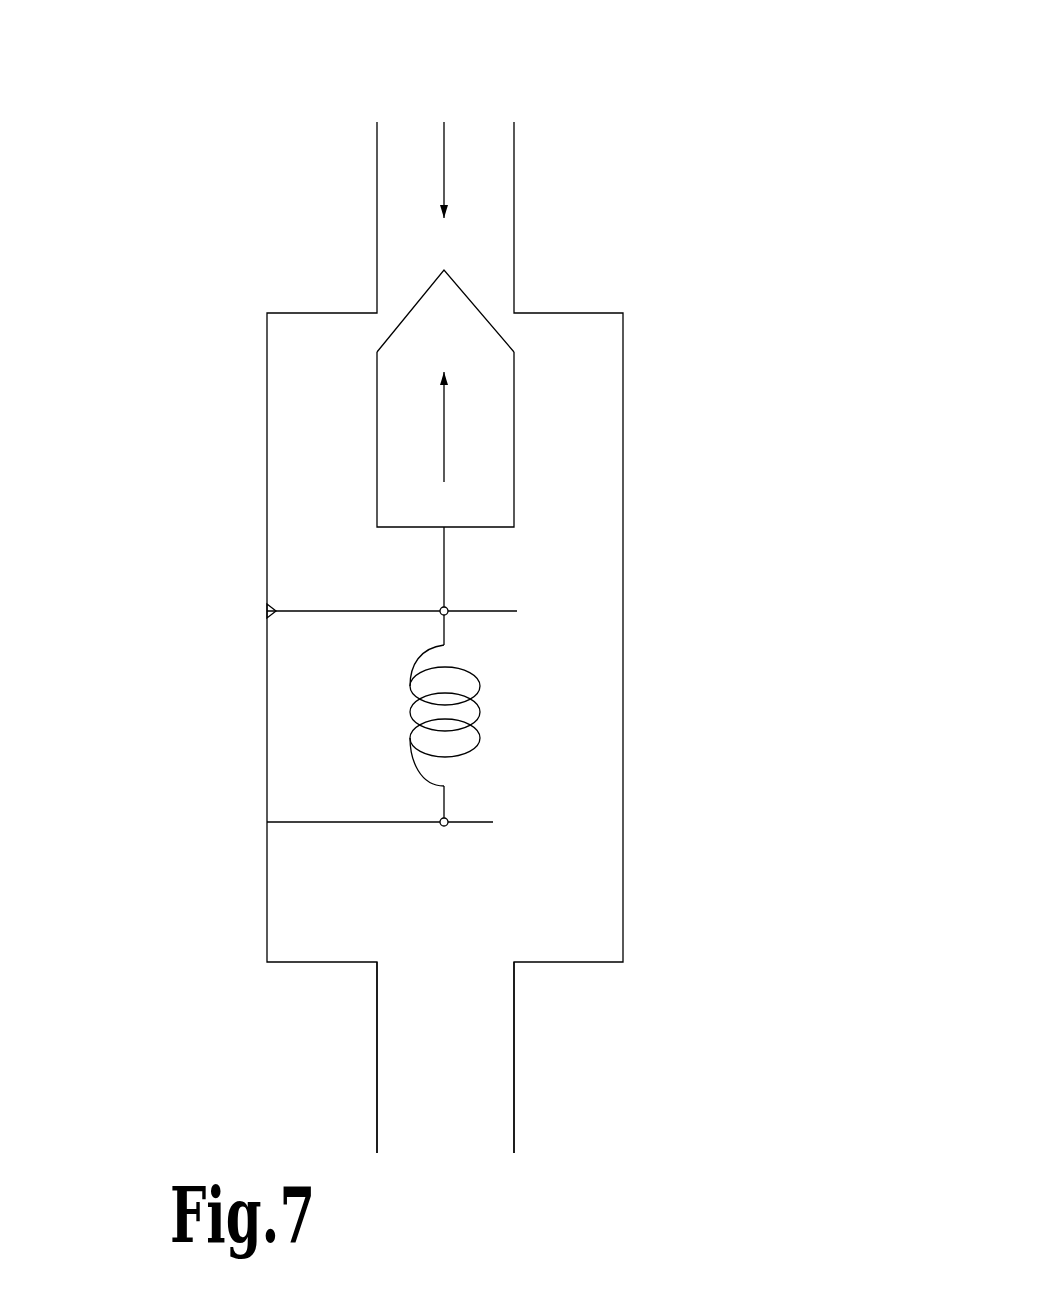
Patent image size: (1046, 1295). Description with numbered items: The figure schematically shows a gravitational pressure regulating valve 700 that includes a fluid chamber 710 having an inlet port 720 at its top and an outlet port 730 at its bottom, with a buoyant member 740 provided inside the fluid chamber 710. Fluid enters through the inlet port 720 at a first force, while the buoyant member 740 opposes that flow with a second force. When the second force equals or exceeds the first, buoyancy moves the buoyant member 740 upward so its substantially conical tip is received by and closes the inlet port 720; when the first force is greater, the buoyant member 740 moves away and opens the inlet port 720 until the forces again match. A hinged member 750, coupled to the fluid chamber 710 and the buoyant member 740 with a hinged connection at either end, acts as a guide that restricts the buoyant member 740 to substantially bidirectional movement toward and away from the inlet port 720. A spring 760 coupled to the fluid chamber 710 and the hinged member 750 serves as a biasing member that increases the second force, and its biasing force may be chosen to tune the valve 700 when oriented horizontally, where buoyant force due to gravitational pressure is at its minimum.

The gravitational pressure regulating valve 700 is at (645, 153).
The fluid chamber 710 is at (585, 428).
The inlet port 720 is at (507, 303).
The outlet port 730 is at (457, 1007).
The buoyant member 740 is at (400, 438).
The hinged member 750 is at (310, 610).
The spring 760 is at (413, 702).